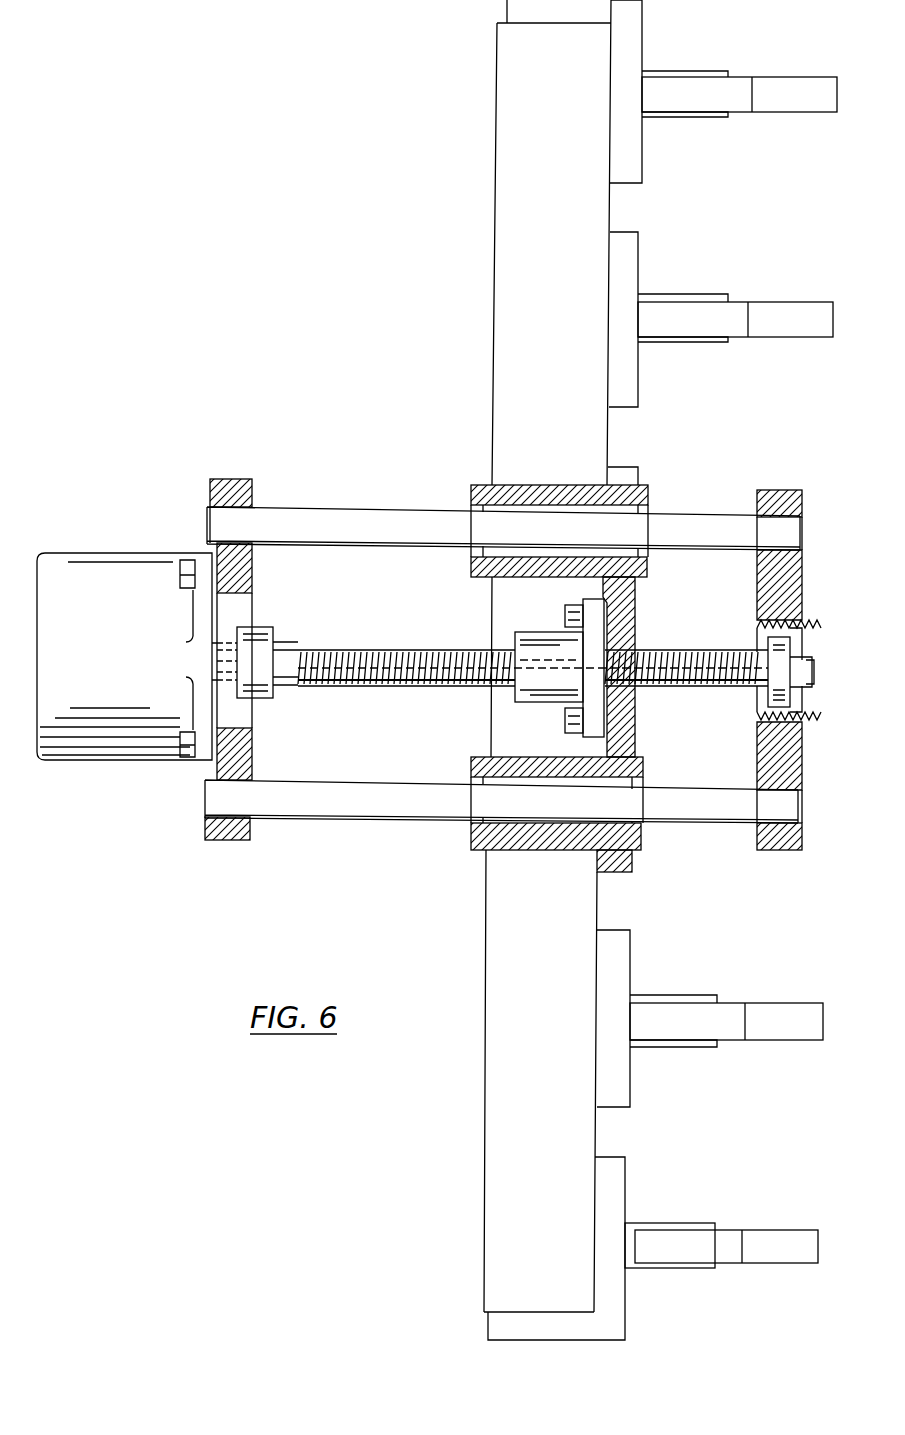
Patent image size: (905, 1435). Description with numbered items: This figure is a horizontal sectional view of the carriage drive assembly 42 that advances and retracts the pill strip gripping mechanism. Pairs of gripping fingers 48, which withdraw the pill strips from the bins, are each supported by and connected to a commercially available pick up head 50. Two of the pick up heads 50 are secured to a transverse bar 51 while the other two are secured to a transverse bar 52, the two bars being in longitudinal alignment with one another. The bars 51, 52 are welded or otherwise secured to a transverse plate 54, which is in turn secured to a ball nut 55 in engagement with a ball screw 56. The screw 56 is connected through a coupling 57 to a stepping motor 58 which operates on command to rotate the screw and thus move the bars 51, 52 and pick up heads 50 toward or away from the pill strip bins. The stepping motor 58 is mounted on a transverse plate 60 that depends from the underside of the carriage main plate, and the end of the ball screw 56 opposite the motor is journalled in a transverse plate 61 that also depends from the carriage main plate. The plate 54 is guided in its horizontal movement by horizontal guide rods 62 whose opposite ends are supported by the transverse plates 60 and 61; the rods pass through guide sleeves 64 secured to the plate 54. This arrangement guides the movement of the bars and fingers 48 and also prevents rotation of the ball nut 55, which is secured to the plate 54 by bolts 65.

The drive assembly 42 is at (462, 858).
The gripping fingers 48 is at (790, 85).
The pick up head 50 is at (628, 232).
The transverse bar 51 is at (497, 222).
The transverse bar 52 is at (487, 1128).
The transverse plate 54 is at (637, 717).
The ball nut 55 is at (543, 640).
The ball screw 56 is at (418, 655).
The coupling 57 is at (266, 698).
The stepping motor 58 is at (124, 658).
The transverse plate 60 is at (228, 843).
The transverse plate 61 is at (803, 750).
The horizontal guide rods 62 is at (384, 522).
The guide sleeves 64 is at (563, 484).
The bolts 65 is at (565, 720).